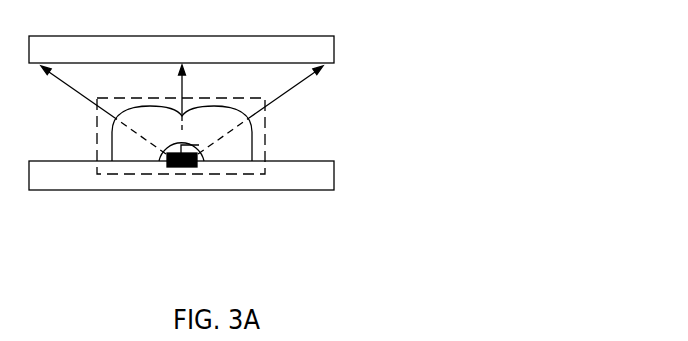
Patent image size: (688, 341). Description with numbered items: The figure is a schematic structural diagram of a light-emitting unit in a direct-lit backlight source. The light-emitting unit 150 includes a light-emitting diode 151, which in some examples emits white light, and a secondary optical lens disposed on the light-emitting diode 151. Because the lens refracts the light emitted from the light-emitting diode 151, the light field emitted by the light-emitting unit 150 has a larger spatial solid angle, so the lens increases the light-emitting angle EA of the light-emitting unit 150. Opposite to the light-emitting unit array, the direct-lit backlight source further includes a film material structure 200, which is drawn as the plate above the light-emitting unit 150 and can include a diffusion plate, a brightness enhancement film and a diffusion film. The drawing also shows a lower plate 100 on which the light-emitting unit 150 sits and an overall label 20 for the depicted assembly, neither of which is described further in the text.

The backlight unit 20 is at (210, 133).
The lower substrate 100 is at (210, 196).
The film material structure 200 is at (210, 33).
The light-emitting unit 150 is at (230, 130).
The light-emitting diode 151 is at (182, 148).
The light-emitting angle EA is at (231, 78).